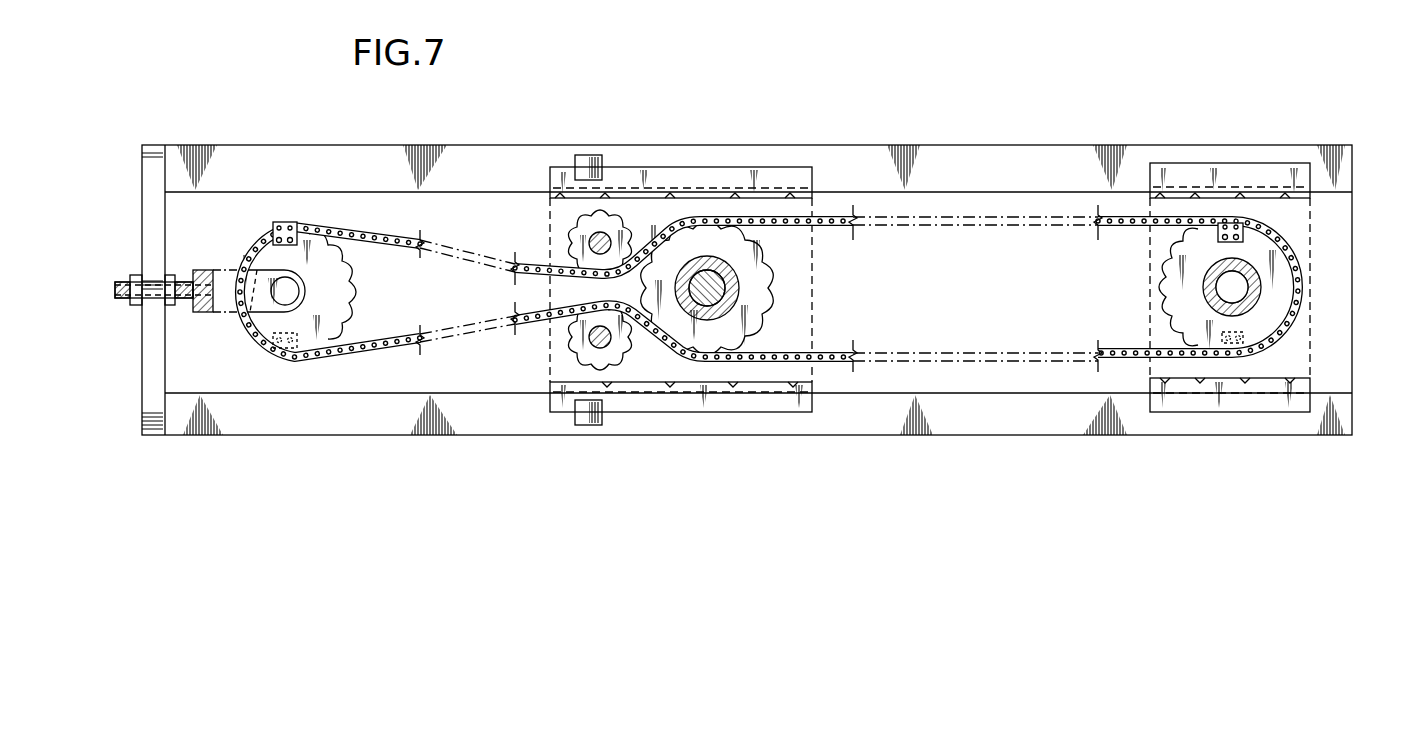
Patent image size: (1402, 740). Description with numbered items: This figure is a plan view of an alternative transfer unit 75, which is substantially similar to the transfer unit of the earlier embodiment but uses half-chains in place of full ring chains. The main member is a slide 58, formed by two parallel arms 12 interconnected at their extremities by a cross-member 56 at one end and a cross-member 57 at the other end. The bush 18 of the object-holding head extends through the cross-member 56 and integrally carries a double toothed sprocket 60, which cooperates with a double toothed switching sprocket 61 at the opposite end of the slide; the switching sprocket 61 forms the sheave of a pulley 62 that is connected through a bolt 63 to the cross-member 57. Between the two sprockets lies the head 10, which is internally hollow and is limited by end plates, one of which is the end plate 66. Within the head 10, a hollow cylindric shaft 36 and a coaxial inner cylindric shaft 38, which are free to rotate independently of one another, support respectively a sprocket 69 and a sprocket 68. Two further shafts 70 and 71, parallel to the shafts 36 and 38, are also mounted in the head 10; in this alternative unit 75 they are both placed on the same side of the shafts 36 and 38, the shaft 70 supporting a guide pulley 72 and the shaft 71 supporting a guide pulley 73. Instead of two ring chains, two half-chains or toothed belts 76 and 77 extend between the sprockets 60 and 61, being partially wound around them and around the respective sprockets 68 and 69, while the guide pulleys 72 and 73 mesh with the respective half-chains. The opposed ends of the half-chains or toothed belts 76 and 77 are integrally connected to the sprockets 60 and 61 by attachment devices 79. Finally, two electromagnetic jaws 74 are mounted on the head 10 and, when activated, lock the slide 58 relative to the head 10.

The head 10 is at (815, 185).
The arms 12 is at (1087, 160).
The bush 18 is at (1256, 297).
The hollow cylindric shaft 36 is at (752, 312).
The cylindric shaft 38 is at (738, 280).
The cross-member 56 is at (1298, 226).
The cross-member 57 is at (147, 210).
The slide 58 is at (787, 145).
The double toothed sprocket 60 is at (1280, 287).
The double toothed switching sprocket 61 is at (347, 310).
The pulley 62 is at (212, 268).
The bolt 63 is at (125, 285).
The end plate 66 is at (692, 170).
The sprocket 68 is at (716, 330).
The sprocket 69 is at (652, 287).
The shaft 70 is at (592, 340).
The shaft 71 is at (595, 240).
The guide pulley 72 is at (614, 355).
The guide pulley 73 is at (578, 247).
The electromagnetic jaws 74 is at (588, 155).
The transfer unit 75 is at (878, 460).
The half-chain or toothed belt 76 is at (820, 360).
The half-chain or toothed belt 77 is at (780, 227).
The attachment devices 79 is at (283, 222).